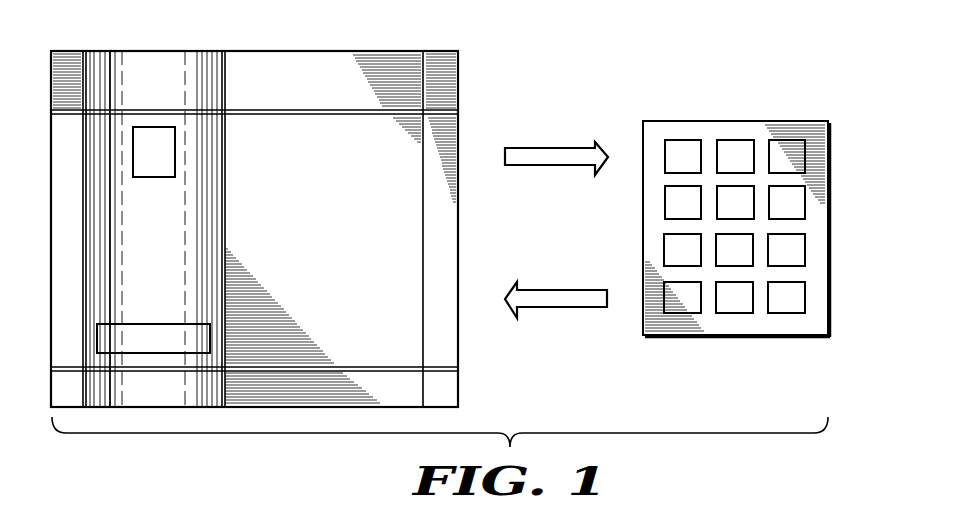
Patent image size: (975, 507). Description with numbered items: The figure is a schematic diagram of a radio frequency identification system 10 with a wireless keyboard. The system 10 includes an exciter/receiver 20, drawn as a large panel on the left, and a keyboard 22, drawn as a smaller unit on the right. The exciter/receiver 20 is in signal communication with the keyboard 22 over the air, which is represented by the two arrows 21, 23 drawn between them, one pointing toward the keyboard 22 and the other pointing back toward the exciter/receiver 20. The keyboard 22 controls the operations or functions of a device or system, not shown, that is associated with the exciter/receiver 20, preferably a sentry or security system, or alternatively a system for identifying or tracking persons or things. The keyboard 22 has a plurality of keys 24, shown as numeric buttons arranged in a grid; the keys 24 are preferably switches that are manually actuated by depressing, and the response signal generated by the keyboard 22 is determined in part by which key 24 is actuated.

The radio frequency identification system 10 is at (611, 40).
The exciter/receiver 20 is at (345, 51).
The arrow 21 is at (545, 148).
The keyboard 22 is at (700, 121).
The arrow 23 is at (545, 290).
The keys 24 is at (665, 160).